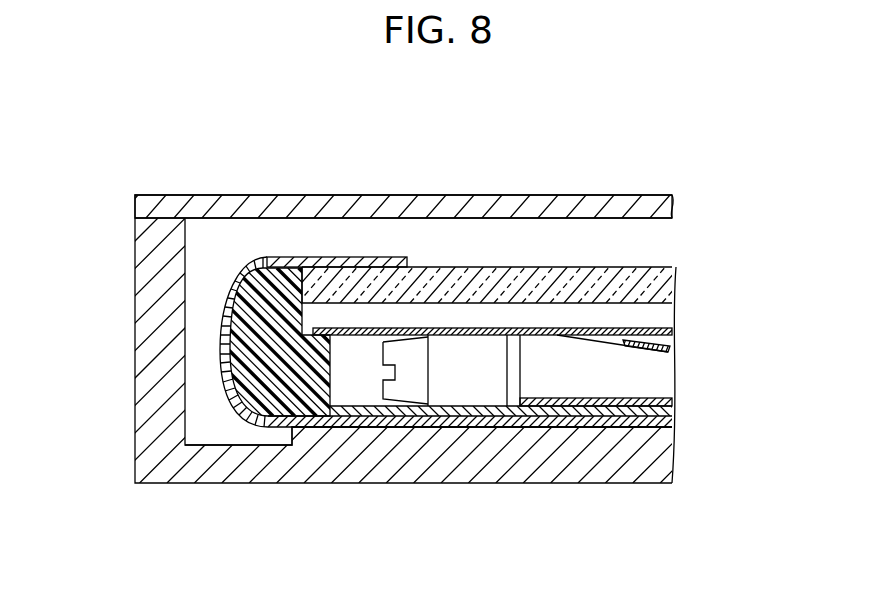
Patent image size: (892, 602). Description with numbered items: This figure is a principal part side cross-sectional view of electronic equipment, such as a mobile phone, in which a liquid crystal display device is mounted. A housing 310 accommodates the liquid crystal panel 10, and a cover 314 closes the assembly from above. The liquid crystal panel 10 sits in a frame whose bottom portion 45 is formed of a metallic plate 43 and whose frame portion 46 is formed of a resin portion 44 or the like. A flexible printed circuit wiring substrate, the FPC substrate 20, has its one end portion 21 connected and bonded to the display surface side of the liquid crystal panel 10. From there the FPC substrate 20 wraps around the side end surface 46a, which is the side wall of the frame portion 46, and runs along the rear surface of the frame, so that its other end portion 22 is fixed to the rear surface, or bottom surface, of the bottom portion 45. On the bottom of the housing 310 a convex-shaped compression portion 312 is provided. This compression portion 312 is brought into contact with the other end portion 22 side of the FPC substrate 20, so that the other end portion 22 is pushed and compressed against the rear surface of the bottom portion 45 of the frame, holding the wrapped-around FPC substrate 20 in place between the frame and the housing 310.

The liquid crystal panel 10 is at (738, 281).
The FPC substrate 20 is at (230, 303).
The one end portion 21 is at (320, 257).
The other end portion 22 is at (540, 418).
The metallic plate 43 is at (505, 472).
The bottom portion 45 is at (447, 410).
The resin portion 44 is at (363, 427).
The frame portion 46 is at (363, 427).
The side end surface 46a is at (229, 333).
The housing 310 is at (140, 412).
The compression portion 312 is at (303, 434).
The cover 314 is at (508, 205).